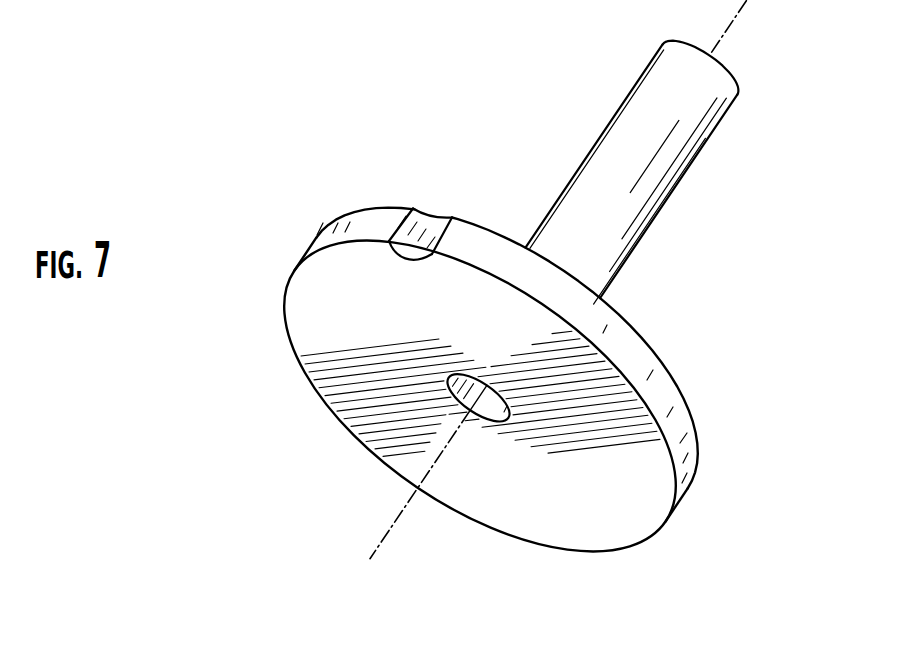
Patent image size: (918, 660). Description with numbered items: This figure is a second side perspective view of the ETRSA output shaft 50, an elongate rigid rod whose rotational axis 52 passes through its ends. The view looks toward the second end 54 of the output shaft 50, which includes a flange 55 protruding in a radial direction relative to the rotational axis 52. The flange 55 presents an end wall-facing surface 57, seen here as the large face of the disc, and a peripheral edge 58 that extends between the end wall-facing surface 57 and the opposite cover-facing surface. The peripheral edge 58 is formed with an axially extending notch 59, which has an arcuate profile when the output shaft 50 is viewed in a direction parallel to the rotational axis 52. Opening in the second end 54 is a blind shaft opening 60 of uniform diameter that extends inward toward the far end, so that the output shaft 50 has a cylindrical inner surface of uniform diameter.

The output shaft 50 is at (495, 64).
The rotational axis 52 is at (397, 518).
The second end 54 is at (437, 390).
The flange 55 is at (613, 523).
The end wall-facing surface 57 is at (297, 310).
The peripheral edge 58 is at (678, 423).
The notch 59 is at (421, 223).
The blind shaft opening 60 is at (498, 418).